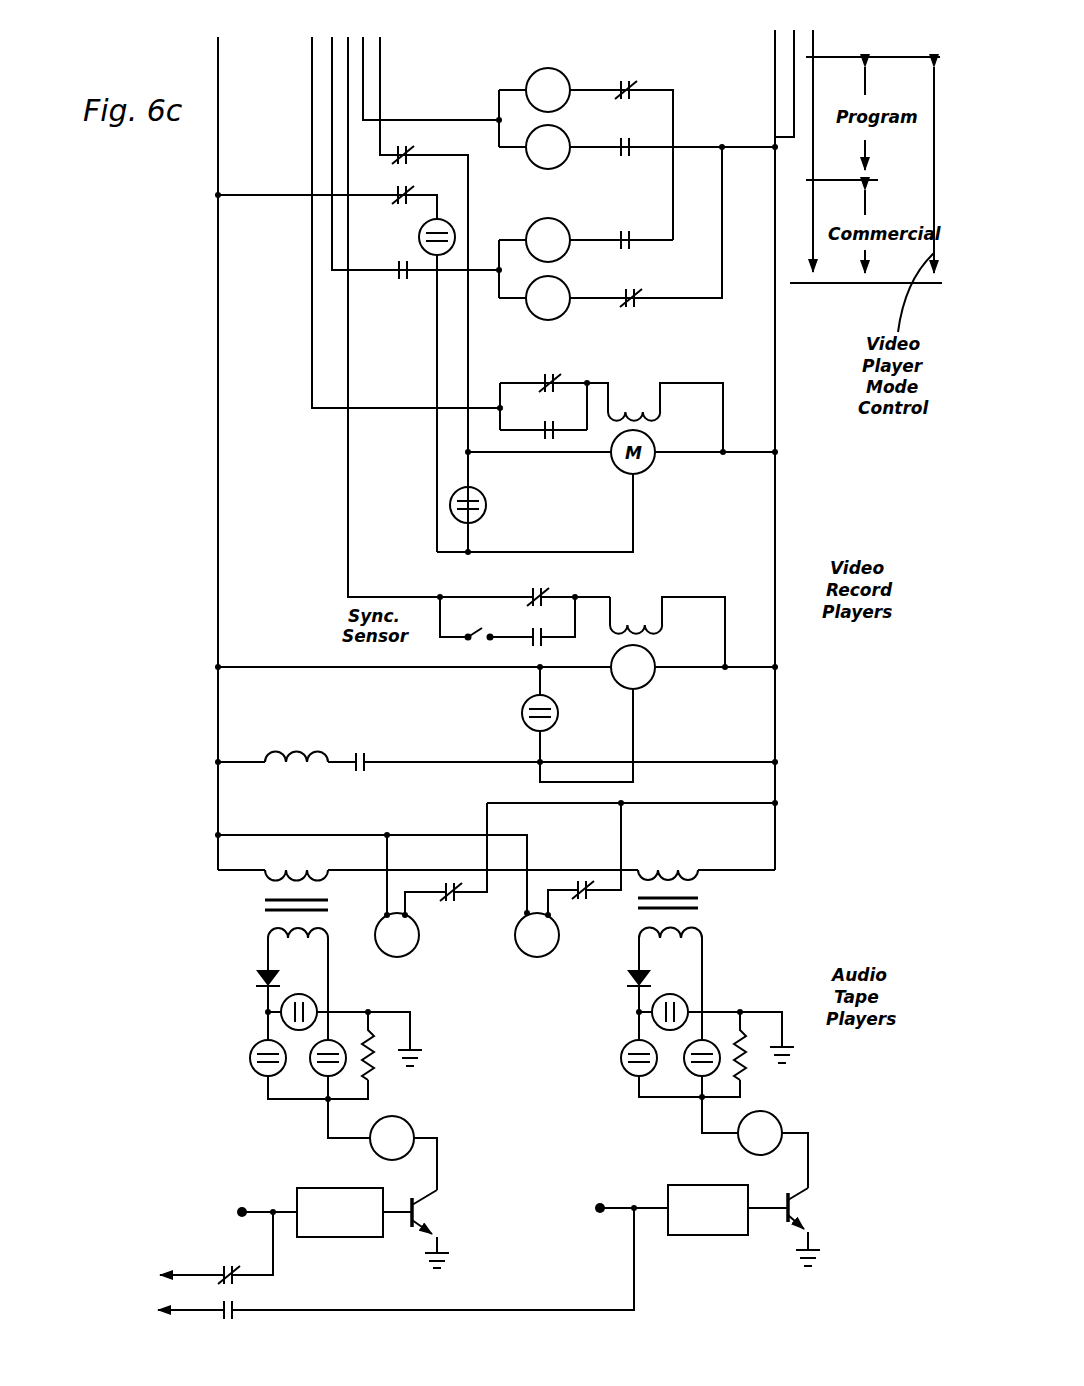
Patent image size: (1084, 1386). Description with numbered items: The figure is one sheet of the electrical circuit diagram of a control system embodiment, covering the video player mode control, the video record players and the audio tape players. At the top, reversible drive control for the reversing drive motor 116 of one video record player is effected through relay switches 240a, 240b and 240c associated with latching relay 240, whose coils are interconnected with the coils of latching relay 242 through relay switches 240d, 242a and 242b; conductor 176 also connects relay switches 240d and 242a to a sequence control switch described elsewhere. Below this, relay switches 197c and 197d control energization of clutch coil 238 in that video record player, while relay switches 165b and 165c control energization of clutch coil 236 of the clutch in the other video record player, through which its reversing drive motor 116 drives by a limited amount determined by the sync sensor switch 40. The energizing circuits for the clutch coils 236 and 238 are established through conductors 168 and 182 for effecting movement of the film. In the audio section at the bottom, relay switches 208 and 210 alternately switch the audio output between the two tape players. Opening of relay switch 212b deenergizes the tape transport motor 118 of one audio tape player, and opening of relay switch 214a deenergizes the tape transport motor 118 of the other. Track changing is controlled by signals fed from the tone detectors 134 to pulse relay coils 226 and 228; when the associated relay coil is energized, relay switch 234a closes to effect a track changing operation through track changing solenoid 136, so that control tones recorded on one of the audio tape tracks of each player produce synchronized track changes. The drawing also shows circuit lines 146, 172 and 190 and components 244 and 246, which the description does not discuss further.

The power supply line 146 is at (218, 294).
The conductor 176 is at (796, 44).
The control line 172 is at (332, 125).
The conductor 182 is at (312, 330).
The conductor 168 is at (348, 538).
The control line 190 is at (444, 118).
The latching relay 240 is at (526, 230).
The relay switch 240a is at (392, 160).
The relay switch 240b is at (408, 190).
The relay switch 240c is at (402, 280).
The relay switch 240d is at (640, 300).
The latching relay 242 is at (574, 164).
The relay switch 242a is at (634, 142).
The relay switch 242b is at (630, 84).
The capacitor 246 is at (419, 237).
The relay switch 197c is at (558, 380).
The relay switch 197d is at (552, 440).
The clutch coil 238 is at (638, 400).
The capacitor 244 is at (488, 506).
The sync sensor switch 40 is at (492, 625).
The relay switch 165b is at (544, 600).
The relay switch 165c is at (525, 648).
The clutch coil 236 is at (637, 615).
The reversing drive motor 116 is at (648, 686).
The track changing solenoid 136 is at (293, 746).
The relay switch 234a is at (382, 738).
The relay switch 214a is at (568, 886).
The relay switch 212b is at (455, 905).
The tape transport motor 118 is at (404, 952).
The pulse relay coil 226 is at (410, 1122).
The pulse relay coil 228 is at (786, 1115).
The tone detector 134 is at (356, 1240).
The relay switch 208 is at (222, 1270).
The relay switch 210 is at (238, 1318).